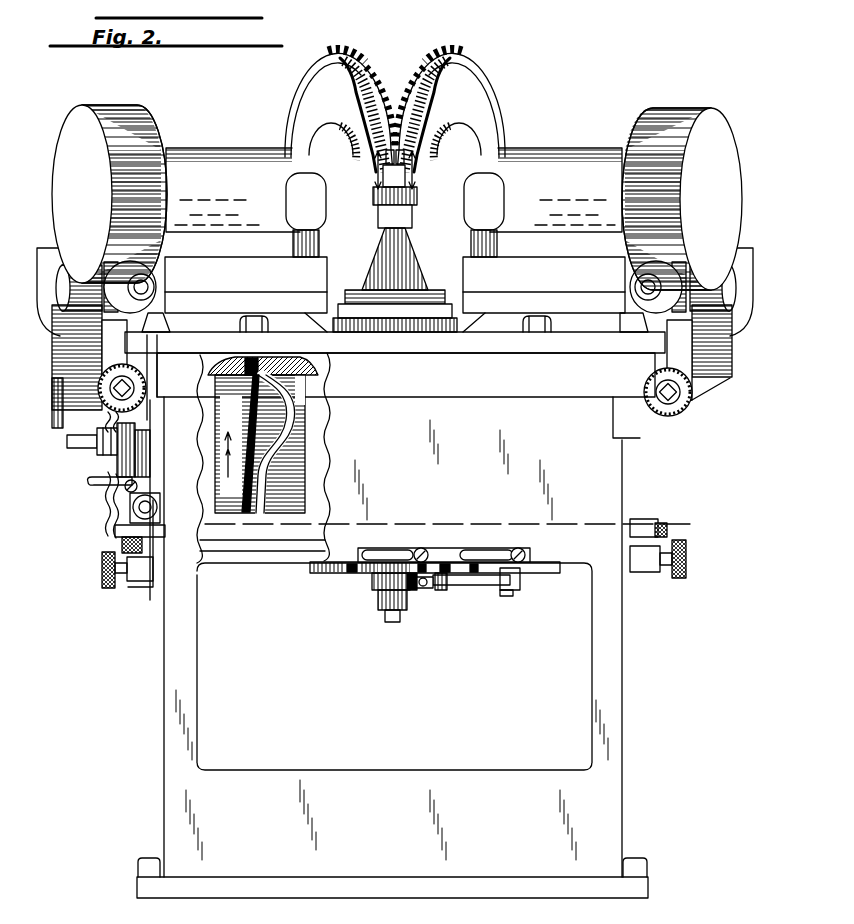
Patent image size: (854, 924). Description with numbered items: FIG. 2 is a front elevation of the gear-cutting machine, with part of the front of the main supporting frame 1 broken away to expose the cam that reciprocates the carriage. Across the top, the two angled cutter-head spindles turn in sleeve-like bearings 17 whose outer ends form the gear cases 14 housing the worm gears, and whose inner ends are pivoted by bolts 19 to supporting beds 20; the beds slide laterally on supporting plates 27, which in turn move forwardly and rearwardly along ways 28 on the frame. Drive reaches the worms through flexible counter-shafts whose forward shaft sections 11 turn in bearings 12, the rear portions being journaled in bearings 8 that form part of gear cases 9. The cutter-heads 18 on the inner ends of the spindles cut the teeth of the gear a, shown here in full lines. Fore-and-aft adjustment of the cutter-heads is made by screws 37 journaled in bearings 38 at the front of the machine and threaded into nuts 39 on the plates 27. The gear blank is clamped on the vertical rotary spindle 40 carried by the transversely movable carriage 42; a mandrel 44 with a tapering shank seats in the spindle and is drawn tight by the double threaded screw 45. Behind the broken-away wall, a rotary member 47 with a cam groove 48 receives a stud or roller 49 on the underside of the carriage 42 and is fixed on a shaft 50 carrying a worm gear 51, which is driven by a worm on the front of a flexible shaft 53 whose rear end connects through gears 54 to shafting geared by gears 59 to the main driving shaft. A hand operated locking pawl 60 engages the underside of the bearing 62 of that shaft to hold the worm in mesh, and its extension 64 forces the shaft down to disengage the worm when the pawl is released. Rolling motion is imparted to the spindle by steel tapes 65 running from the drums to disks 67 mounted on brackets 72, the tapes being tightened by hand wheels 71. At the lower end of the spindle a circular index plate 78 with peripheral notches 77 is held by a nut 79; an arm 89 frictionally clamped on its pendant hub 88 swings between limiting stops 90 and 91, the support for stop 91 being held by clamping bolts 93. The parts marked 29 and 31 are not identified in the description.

The main supporting frame 1 is at (164, 705).
The bearings 8 is at (60, 288).
The gear cases 9 is at (44, 262).
The shaft sections 11 is at (152, 286).
The bearings 12 is at (56, 318).
The gear cases 14 is at (108, 106).
The bearings 17 is at (222, 150).
The cutter-heads 18 is at (416, 78).
The bolts 19 is at (296, 212).
The supporting beds 20 is at (214, 268).
The supporting plates 27 is at (330, 345).
The ways 28 is at (218, 322).
The ring 29 is at (306, 82).
The gear 31 is at (350, 50).
The screws 37 is at (130, 380).
The bearings 38 is at (696, 396).
The nuts 39 is at (112, 348).
The rotary spindle 40 is at (386, 606).
The carriage 42 is at (417, 354).
The mandrel 44 is at (395, 280).
The double threaded screw 45 is at (393, 622).
The rotary member 47 is at (290, 514).
The cam groove 48 is at (248, 514).
The stud or roller 49 is at (263, 435).
The shaft or spindle 50 is at (82, 452).
The worm gear 51 is at (152, 455).
The flexible shaft 53 is at (156, 508).
The gears 54 is at (104, 512).
The gears 59 is at (52, 420).
The hand operated locking pawl 60 is at (128, 500).
The bearing 62 is at (160, 530).
The extension 64 is at (148, 488).
The steel tapes 65 is at (276, 566).
The disks 67 is at (124, 548).
The hand wheels 71 is at (104, 584).
The brackets 72 is at (147, 585).
The notches 77 is at (318, 575).
The circular index plate 78 is at (356, 575).
The nut 79 is at (376, 590).
The central pendant hub 88 is at (418, 592).
The radially projecting arm 89 is at (470, 588).
The limiting stop 90 is at (520, 578).
The limiting stop 91 is at (444, 592).
The clamping bolts 93 is at (517, 553).
The gear a is at (395, 196).